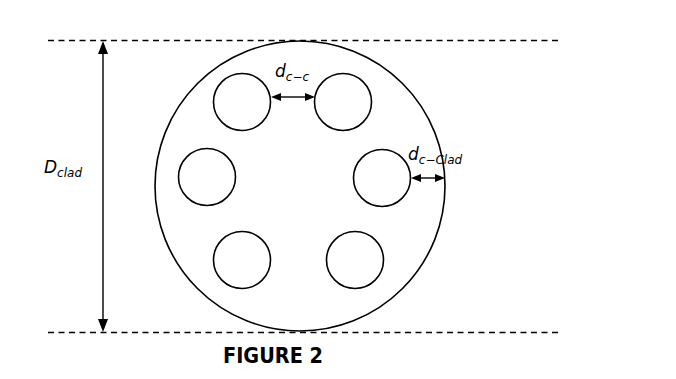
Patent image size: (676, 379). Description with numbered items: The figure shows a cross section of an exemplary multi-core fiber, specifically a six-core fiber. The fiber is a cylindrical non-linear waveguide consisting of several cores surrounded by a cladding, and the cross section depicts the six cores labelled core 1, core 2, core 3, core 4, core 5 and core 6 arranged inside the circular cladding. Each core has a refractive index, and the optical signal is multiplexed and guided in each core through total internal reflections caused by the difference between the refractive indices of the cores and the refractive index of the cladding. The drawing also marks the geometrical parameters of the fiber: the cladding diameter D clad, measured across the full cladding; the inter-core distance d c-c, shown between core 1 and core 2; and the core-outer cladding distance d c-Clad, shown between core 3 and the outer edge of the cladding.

The first core 1 is at (242, 102).
The second core 2 is at (343, 102).
The third core 3 is at (382, 178).
The fourth core 4 is at (355, 260).
The fifth core 5 is at (242, 260).
The sixth core 6 is at (207, 177).